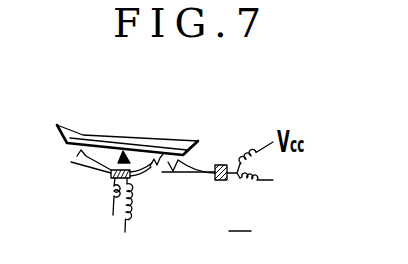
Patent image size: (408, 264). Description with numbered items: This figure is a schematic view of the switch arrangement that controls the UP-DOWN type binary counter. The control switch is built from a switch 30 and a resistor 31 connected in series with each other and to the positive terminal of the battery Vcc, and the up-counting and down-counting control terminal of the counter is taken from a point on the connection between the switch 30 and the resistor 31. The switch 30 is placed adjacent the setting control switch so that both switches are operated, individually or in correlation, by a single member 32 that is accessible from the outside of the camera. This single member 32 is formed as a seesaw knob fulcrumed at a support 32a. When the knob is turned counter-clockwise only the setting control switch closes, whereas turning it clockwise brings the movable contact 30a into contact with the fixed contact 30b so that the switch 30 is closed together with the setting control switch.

The switch 30 is at (229, 168).
The movable contact 30a is at (207, 170).
The fixed contact 30b is at (198, 174).
The resistor 31 is at (268, 181).
The single member 32 is at (152, 139).
The support 32a is at (118, 150).